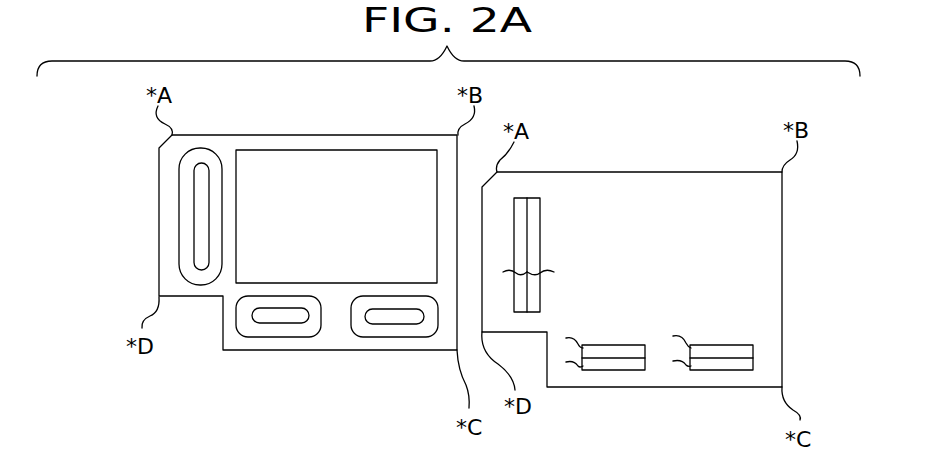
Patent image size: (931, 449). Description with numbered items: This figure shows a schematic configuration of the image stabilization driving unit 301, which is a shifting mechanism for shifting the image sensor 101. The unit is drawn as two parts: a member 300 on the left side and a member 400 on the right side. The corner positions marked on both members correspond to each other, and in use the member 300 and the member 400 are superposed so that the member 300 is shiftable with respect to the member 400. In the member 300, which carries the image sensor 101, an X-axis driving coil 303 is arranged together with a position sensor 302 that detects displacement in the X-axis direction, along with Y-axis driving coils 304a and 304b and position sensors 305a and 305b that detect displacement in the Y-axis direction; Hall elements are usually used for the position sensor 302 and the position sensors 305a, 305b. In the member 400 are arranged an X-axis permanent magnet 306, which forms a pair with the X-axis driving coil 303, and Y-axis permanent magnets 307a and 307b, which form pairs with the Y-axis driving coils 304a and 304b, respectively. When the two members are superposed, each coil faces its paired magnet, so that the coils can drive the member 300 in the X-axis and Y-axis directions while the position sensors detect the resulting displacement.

The image stabilization driving unit 301 is at (115, 134).
The member 300 is at (243, 135).
The image sensor 101 is at (416, 150).
The position sensor 302 is at (202, 216).
The X-axis driving coil 303 is at (179, 259).
The Y-axis driving coil 304a is at (250, 338).
The Y-axis driving coil 304b is at (378, 338).
The position sensor 305a is at (283, 316).
The position sensor 305b is at (398, 316).
The X-axis permanent magnet 306 is at (543, 220).
The Y-axis permanent magnet 307a is at (622, 370).
The Y-axis permanent magnet 307b is at (727, 370).
The member 400 is at (782, 226).